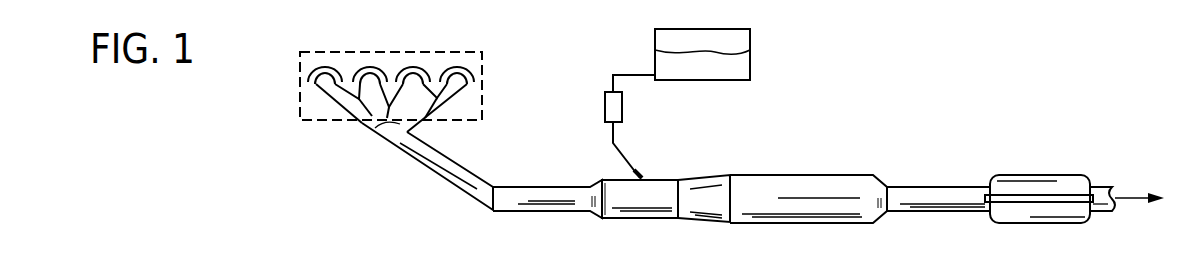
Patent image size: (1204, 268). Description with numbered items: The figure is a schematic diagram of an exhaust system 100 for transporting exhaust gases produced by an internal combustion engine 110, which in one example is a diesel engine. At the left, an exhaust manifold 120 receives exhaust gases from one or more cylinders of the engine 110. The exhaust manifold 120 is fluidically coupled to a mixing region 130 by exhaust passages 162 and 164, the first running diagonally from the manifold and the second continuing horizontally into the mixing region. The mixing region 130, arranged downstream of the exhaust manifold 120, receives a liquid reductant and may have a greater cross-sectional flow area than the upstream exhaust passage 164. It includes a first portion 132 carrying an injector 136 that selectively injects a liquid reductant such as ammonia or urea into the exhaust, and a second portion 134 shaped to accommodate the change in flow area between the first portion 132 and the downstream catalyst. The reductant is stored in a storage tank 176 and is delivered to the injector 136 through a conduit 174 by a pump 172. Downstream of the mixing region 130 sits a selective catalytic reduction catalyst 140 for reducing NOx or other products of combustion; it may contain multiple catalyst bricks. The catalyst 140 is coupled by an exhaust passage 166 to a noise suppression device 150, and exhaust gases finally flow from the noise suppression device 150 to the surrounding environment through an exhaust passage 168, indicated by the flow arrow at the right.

The exhaust system 100 is at (386, 193).
The internal combustion engine 110 is at (483, 66).
The exhaust manifold 120 is at (356, 122).
The mixing region 130 is at (687, 189).
The first portion 132 is at (658, 178).
The second portion 134 is at (722, 173).
The injector 136 is at (637, 170).
The selective catalytic reductant (SCR) catalyst 140 is at (815, 172).
The noise suppression device 150 is at (1040, 173).
The exhaust passage 162 is at (443, 182).
The exhaust passage 164 is at (537, 182).
The exhaust passage 166 is at (933, 185).
The exhaust passage 168 is at (1100, 178).
The pump 172 is at (605, 103).
The conduit 174 is at (652, 72).
The storage tank 176 is at (753, 68).